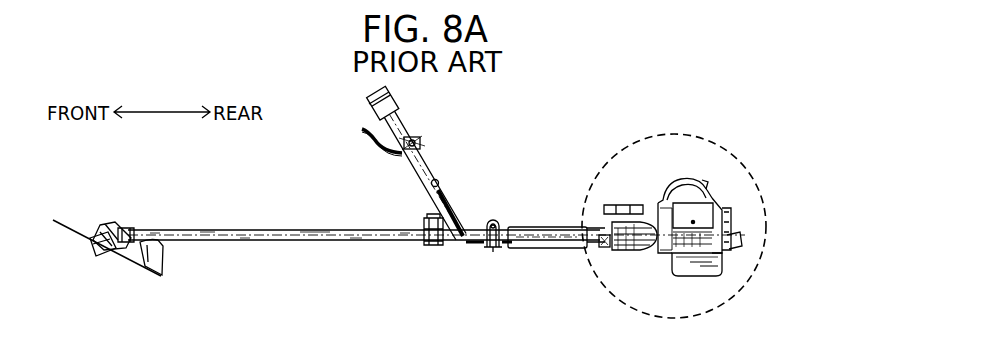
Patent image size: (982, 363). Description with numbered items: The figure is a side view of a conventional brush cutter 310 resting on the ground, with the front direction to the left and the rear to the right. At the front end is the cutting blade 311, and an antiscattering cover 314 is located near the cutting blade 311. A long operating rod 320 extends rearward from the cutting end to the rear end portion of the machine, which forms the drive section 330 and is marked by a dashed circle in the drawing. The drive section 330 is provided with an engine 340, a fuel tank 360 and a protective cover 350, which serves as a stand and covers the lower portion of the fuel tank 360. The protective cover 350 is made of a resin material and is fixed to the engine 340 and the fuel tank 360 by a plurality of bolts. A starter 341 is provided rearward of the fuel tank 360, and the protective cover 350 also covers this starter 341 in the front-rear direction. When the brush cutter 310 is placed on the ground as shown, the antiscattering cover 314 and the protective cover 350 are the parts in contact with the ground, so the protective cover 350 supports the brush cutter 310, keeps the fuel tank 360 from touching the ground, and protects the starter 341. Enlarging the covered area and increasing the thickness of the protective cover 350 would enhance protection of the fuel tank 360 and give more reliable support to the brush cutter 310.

The brush cutter 310 is at (436, 235).
The cutting blade 311 is at (76, 237).
The antiscattering cover 314 is at (153, 264).
The operating rod 320 is at (311, 233).
The drive section 330 is at (706, 213).
The engine 340 is at (703, 198).
The starter 341 is at (721, 217).
The protective cover 350 is at (706, 282).
The fuel tank 360 is at (704, 263).